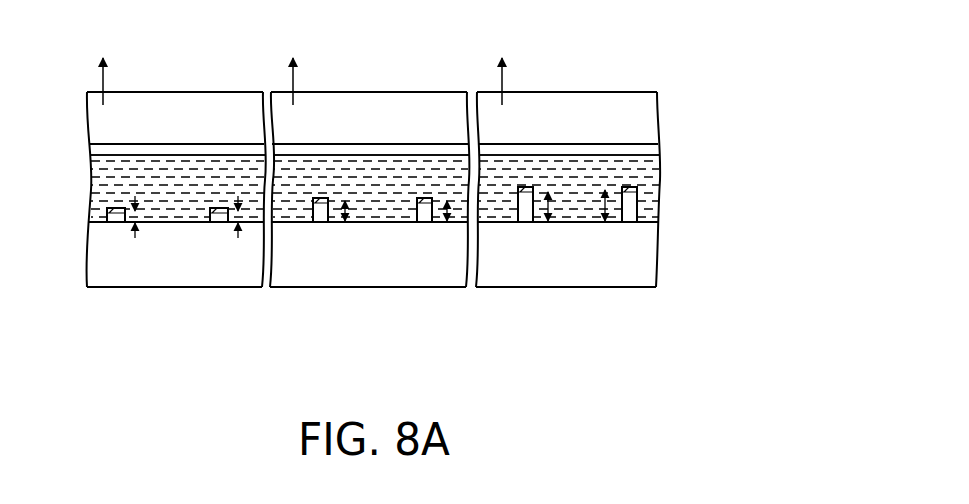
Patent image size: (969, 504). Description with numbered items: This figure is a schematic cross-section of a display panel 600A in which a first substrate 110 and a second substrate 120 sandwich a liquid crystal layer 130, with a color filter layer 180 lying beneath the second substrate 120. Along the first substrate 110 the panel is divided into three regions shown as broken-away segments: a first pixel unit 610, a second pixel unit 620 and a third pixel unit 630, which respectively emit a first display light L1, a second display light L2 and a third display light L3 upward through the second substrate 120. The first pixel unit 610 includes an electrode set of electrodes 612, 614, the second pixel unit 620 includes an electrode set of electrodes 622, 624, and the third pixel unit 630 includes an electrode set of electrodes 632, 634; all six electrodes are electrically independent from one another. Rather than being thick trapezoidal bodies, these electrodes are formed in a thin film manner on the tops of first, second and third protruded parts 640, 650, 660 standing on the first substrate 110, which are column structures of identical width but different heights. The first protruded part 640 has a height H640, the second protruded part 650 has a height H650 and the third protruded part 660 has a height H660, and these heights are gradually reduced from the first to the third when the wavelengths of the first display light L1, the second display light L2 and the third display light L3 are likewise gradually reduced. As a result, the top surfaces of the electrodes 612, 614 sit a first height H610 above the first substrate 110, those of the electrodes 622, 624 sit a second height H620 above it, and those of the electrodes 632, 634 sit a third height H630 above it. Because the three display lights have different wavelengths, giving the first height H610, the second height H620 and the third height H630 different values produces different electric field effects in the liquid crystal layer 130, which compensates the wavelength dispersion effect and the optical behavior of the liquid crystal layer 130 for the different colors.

The first substrate 110 is at (105, 255).
The second substrate 120 is at (108, 123).
The liquid crystal layer 130 is at (108, 185).
The color filter layer 180 is at (663, 145).
The display panel 600A is at (782, 384).
The first pixel unit 610 is at (649, 250).
The electrode 612 is at (620, 250).
The electrode 614 is at (634, 189).
The second pixel unit 620 is at (372, 170).
The electrode 622 is at (372, 193).
The electrode 624 is at (428, 198).
The third pixel unit 630 is at (167, 170).
The electrode 632 is at (167, 193).
The electrode 634 is at (223, 208).
The first protruded part 640 is at (628, 212).
The second protruded part 650 is at (423, 222).
The third protruded part 660 is at (215, 222).
The first height H610 is at (605, 222).
The second height H620 is at (448, 216).
The third height H630 is at (239, 214).
The height of the first protruded part H640 is at (549, 216).
The height of the second protruded part H650 is at (347, 215).
The height of the third protruded part H660 is at (137, 214).
The first display light L1 is at (501, 72).
The second display light L2 is at (292, 72).
The third display light L3 is at (102, 72).